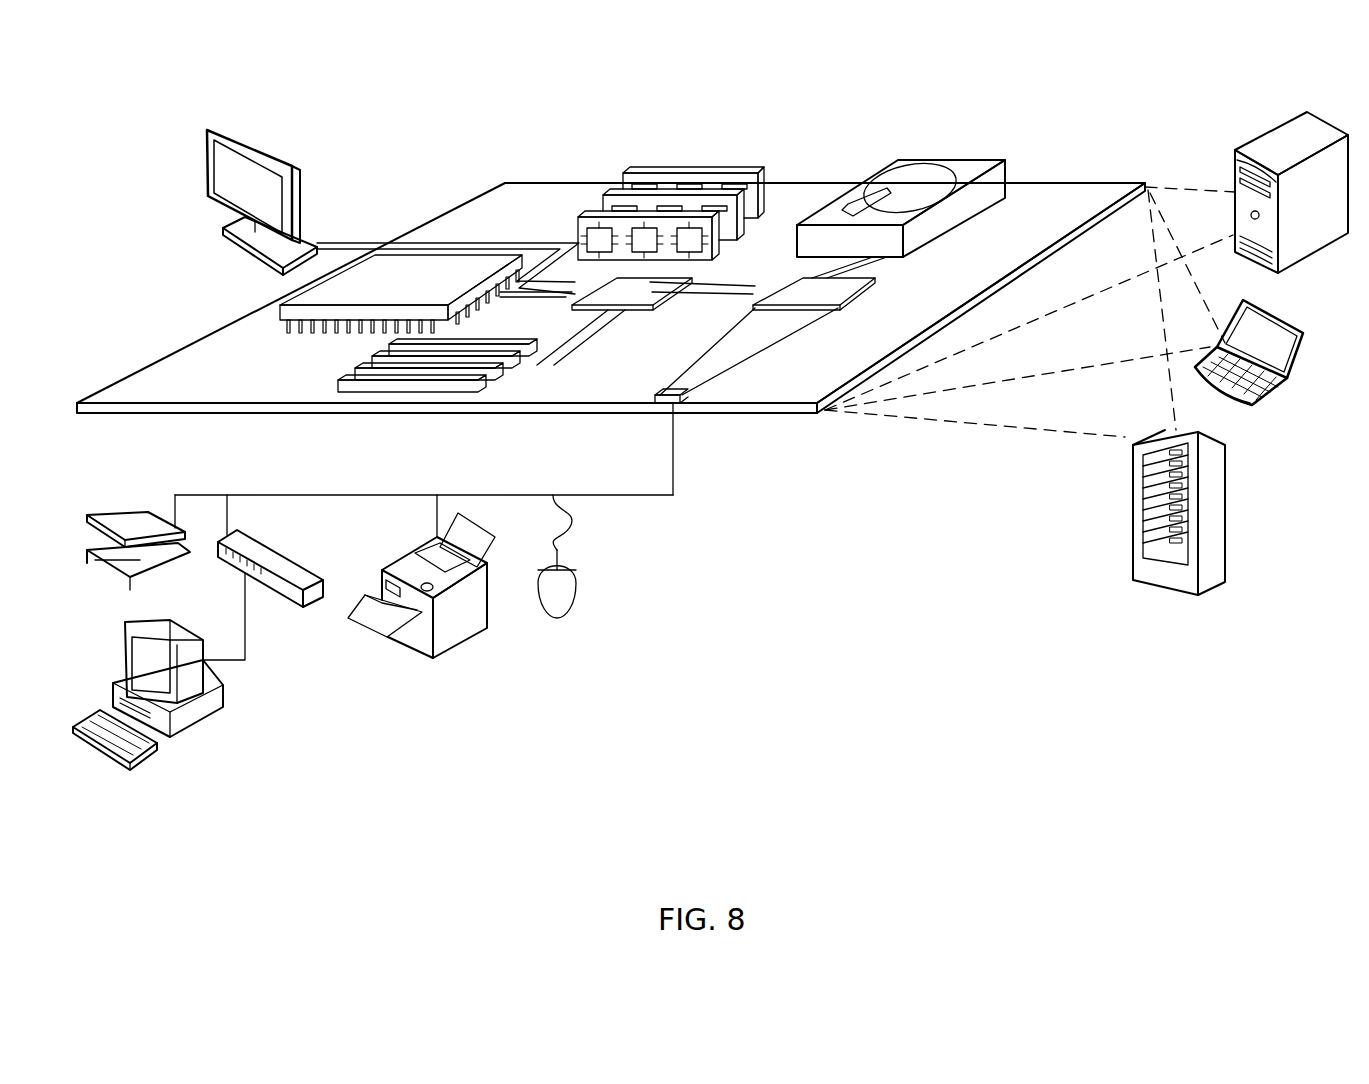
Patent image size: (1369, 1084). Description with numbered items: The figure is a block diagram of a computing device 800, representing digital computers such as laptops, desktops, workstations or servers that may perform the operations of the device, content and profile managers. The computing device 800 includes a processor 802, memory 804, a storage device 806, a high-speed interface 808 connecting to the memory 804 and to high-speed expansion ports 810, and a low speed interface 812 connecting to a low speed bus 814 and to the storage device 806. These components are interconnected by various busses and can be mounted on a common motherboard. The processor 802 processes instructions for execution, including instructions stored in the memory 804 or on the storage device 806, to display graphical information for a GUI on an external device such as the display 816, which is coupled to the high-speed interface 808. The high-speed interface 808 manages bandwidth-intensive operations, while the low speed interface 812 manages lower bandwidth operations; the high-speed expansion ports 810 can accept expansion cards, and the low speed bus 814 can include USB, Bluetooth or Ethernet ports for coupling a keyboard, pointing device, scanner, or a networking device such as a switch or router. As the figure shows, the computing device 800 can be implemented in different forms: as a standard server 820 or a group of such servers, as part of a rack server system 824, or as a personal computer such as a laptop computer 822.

The computing device 800 is at (419, 150).
The processor 802 is at (292, 312).
The memory 804 is at (648, 174).
The storage device 806 is at (900, 160).
The high-speed interface 808 is at (605, 292).
The high-speed expansion ports 810 is at (366, 374).
The low speed interface 812 is at (795, 289).
The low speed bus 814 is at (685, 405).
The display 816 is at (213, 128).
The standard server 820 is at (1236, 168).
The laptop computer 822 is at (1304, 333).
The rack server system 824 is at (1134, 541).